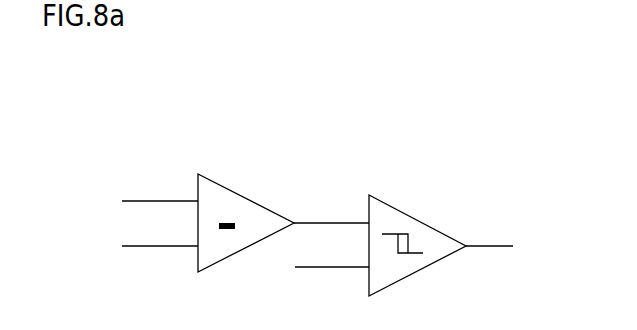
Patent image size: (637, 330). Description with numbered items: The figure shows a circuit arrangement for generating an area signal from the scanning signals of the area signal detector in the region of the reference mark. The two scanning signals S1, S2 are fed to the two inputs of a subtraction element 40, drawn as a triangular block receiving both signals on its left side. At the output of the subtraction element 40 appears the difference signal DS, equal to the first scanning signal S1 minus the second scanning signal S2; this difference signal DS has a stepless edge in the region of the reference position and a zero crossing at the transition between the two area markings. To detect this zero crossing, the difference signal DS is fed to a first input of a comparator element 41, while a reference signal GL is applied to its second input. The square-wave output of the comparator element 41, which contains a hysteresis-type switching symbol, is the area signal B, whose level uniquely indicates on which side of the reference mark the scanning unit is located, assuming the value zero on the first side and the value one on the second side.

The subtraction element 40 is at (253, 215).
The comparator element 41 is at (403, 222).
The scanning signal S1 is at (149, 191).
The scanning signal S2 is at (149, 236).
The difference signal DS is at (306, 199).
The reference signal GL is at (311, 267).
The area signal B is at (489, 225).